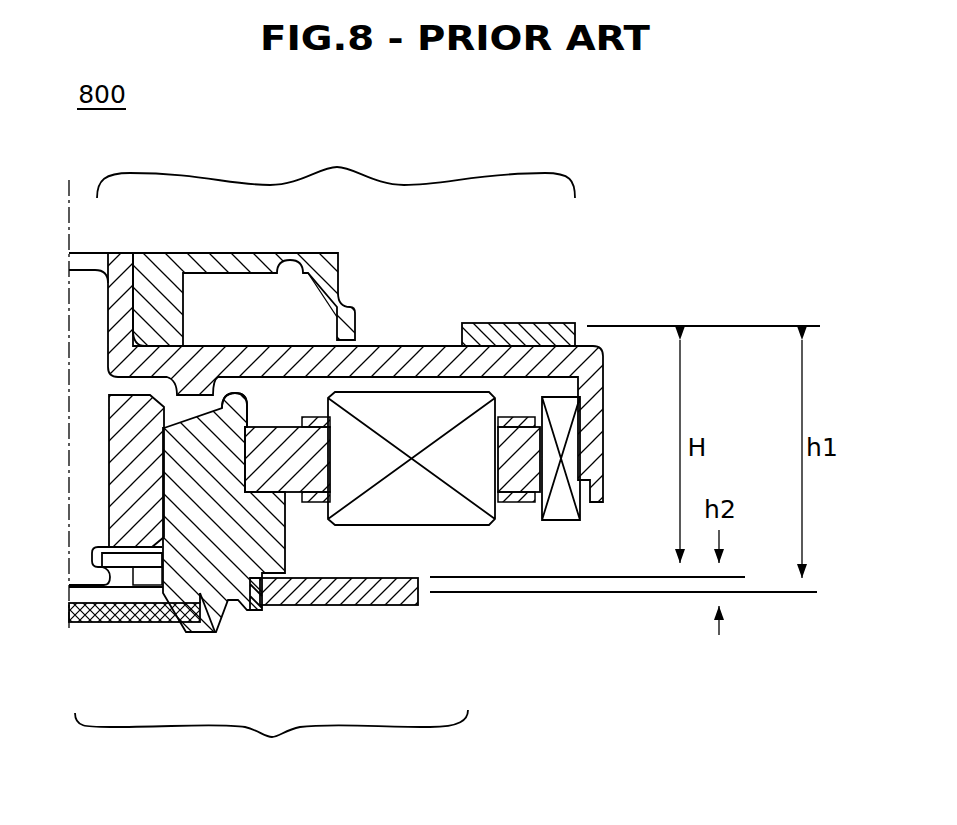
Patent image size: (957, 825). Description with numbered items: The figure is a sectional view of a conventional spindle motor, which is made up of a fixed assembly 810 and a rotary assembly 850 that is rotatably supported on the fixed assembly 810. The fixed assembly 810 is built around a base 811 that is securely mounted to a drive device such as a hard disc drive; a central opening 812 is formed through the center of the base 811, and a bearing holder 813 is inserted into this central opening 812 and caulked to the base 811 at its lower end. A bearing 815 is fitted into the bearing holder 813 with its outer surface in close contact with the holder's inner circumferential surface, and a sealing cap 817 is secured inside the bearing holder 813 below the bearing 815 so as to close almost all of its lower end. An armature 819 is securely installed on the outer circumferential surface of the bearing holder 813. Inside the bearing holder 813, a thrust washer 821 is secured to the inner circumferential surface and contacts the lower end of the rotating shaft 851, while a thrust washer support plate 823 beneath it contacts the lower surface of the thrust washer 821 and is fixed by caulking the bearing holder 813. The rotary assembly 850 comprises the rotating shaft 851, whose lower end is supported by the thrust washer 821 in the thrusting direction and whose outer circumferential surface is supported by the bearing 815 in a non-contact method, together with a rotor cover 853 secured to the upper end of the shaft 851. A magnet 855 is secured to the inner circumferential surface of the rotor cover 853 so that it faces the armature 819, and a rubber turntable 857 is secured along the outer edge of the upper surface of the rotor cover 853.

The rotary assembly 850 is at (336, 167).
The rotating shaft 851 is at (85, 280).
The rotor cover 853 is at (400, 365).
The magnet 855 is at (560, 413).
The rubber turntable 857 is at (495, 323).
The armature 819 is at (473, 497).
The fixed assembly 810 is at (271, 742).
The base 811 is at (392, 605).
The central opening 812 is at (247, 610).
The bearing holder 813 is at (262, 550).
The bearing 815 is at (127, 498).
The sealing cap 817 is at (160, 565).
The thrust washer 821 is at (92, 622).
The thrust washer support plate 823 is at (160, 567).